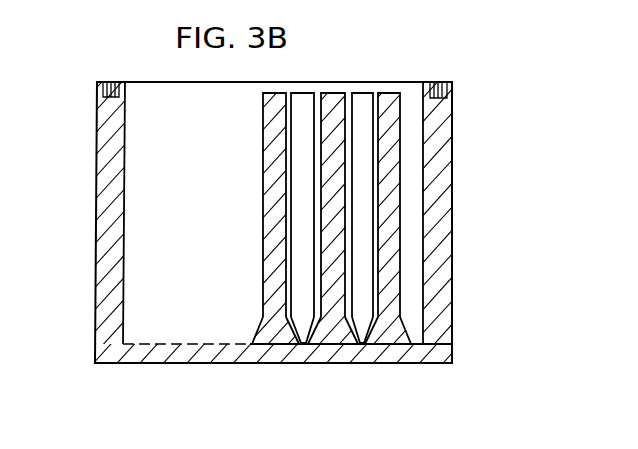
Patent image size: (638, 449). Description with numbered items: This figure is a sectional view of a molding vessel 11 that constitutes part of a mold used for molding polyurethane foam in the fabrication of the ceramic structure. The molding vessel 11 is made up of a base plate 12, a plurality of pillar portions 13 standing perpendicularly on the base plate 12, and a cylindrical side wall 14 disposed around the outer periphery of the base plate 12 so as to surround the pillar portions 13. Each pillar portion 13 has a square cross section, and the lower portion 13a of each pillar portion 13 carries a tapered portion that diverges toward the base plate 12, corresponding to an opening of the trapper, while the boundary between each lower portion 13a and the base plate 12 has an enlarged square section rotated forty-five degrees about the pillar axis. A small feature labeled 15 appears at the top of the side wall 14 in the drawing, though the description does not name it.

The molding vessel 11 is at (462, 207).
The base plate 12 is at (308, 353).
The pillar portions 13 is at (389, 155).
The lower portion 13a is at (382, 336).
The cylindrical side wall 14 is at (430, 253).
The groove 15 is at (437, 84).